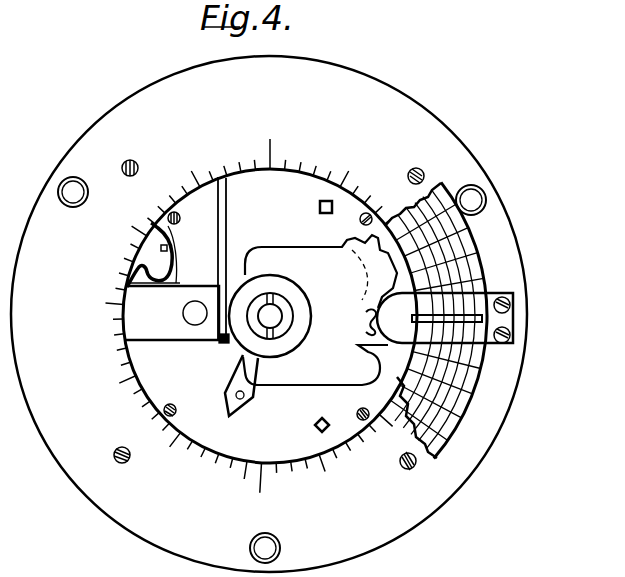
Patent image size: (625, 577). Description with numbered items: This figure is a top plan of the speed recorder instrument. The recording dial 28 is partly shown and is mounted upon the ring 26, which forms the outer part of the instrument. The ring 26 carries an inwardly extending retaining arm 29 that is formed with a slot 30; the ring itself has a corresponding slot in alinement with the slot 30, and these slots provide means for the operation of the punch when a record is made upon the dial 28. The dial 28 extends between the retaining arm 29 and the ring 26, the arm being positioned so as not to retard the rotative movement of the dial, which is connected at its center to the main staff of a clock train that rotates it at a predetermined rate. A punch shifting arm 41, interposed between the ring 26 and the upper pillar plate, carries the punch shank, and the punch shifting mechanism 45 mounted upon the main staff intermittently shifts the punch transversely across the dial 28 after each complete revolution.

The ring 26 is at (269, 314).
The recording dial 28 is at (463, 257).
The retaining arm 29 is at (460, 313).
The slot 30 is at (482, 320).
The punch shifting arm 41 is at (176, 327).
The punch shifting mechanism 45 is at (340, 355).